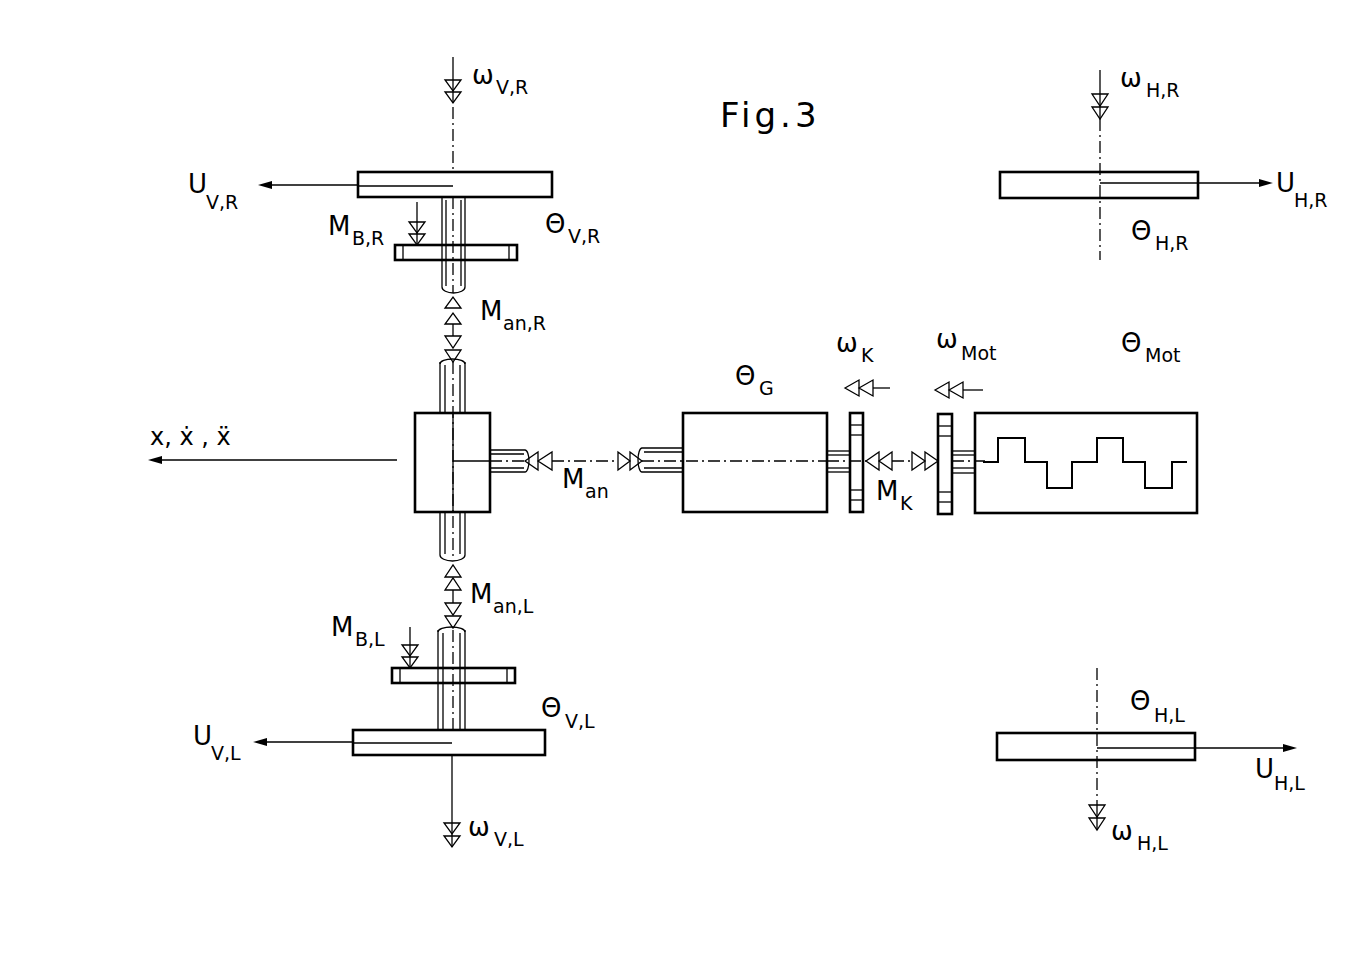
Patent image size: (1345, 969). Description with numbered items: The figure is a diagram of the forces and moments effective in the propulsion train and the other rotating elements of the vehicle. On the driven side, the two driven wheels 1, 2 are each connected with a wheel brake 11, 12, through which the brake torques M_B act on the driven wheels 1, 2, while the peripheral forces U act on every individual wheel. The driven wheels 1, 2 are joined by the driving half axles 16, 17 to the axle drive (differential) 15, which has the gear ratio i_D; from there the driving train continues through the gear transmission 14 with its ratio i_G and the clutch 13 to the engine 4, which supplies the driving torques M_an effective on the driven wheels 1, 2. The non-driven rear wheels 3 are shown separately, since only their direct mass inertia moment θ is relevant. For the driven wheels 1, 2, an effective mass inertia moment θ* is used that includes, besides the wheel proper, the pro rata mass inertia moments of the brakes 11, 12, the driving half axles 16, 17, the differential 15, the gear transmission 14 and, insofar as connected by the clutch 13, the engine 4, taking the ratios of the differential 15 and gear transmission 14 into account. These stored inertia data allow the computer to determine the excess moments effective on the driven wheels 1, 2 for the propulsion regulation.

The driven wheel 1 is at (370, 180).
The driven wheel 2 is at (370, 748).
The non-driven rear wheel 3 is at (1031, 184).
The engine 4 is at (1150, 497).
The wheel brake 11 is at (402, 262).
The wheel brake 12 is at (395, 685).
The clutch 13 is at (896, 510).
The gear transmission 14 is at (751, 490).
The axle drive (differential) 15 is at (432, 485).
The driving half axle 16 is at (445, 276).
The driving half axle 17 is at (445, 541).